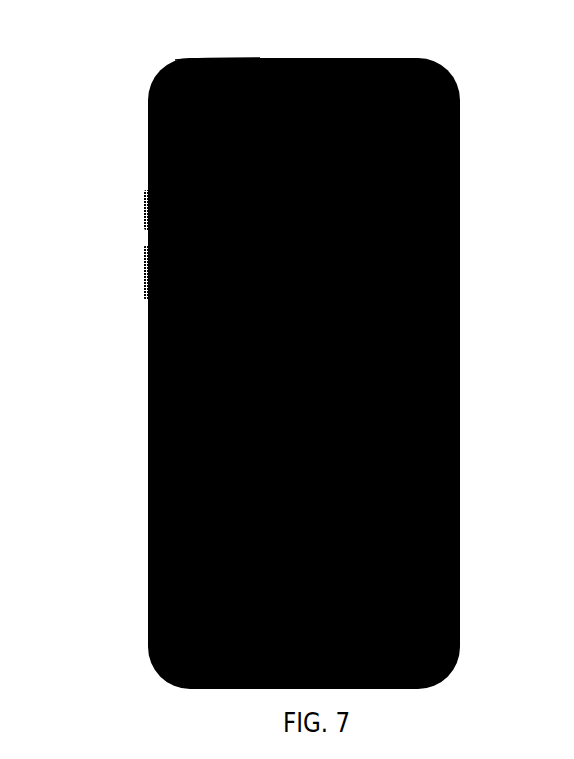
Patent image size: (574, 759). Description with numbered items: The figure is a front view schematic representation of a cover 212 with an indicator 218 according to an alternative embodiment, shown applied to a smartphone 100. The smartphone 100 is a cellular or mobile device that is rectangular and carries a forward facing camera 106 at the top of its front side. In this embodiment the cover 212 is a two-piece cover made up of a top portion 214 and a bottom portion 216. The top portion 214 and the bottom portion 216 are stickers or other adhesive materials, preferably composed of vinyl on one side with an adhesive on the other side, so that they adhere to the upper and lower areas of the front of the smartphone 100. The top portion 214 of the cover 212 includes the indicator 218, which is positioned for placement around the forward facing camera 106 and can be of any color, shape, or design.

The smartphone 100 is at (281, 349).
The forward facing camera 106 is at (273, 60).
The cover 212 is at (122, 128).
The top portion 214 is at (162, 114).
The bottom portion 216 is at (162, 642).
The indicator 218 is at (205, 60).